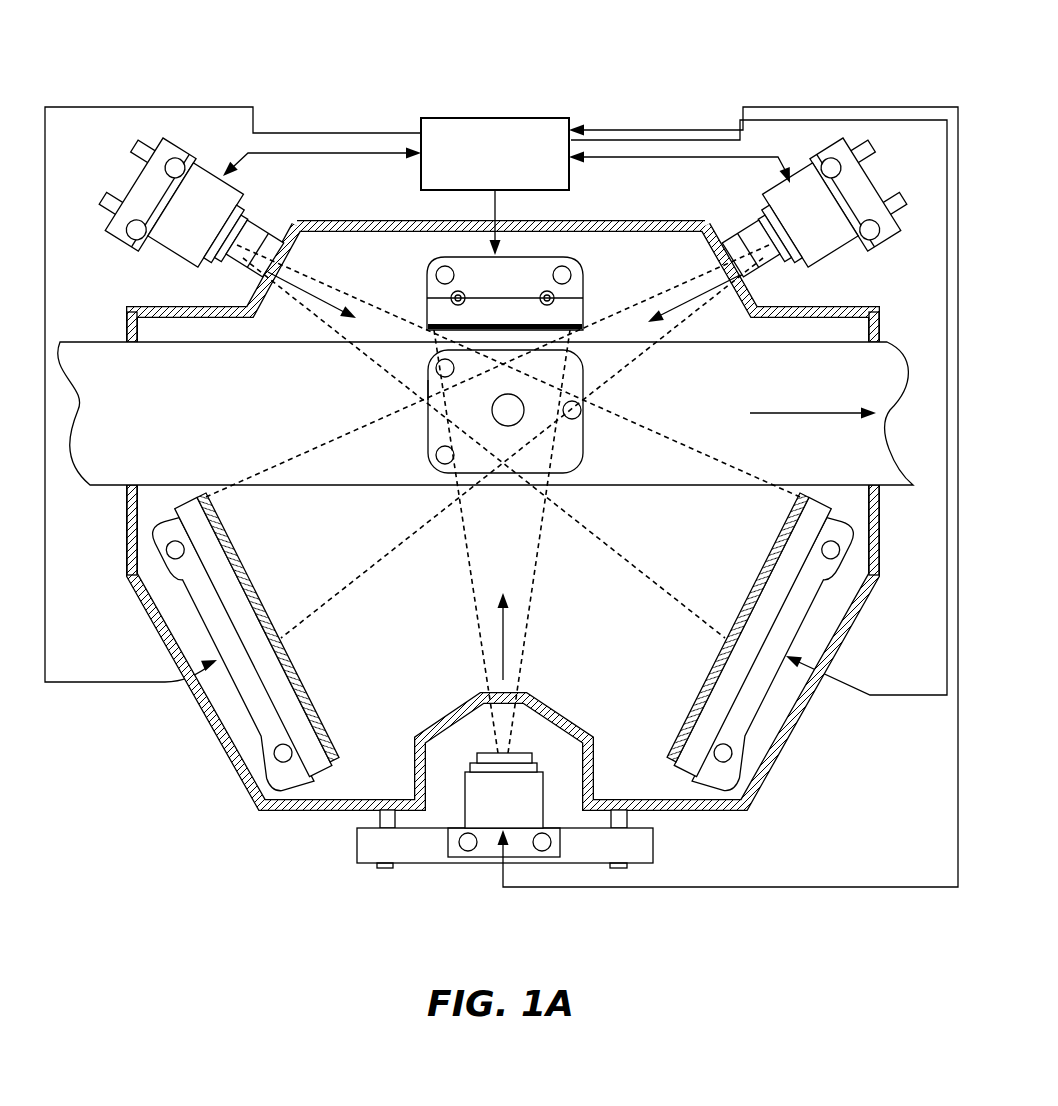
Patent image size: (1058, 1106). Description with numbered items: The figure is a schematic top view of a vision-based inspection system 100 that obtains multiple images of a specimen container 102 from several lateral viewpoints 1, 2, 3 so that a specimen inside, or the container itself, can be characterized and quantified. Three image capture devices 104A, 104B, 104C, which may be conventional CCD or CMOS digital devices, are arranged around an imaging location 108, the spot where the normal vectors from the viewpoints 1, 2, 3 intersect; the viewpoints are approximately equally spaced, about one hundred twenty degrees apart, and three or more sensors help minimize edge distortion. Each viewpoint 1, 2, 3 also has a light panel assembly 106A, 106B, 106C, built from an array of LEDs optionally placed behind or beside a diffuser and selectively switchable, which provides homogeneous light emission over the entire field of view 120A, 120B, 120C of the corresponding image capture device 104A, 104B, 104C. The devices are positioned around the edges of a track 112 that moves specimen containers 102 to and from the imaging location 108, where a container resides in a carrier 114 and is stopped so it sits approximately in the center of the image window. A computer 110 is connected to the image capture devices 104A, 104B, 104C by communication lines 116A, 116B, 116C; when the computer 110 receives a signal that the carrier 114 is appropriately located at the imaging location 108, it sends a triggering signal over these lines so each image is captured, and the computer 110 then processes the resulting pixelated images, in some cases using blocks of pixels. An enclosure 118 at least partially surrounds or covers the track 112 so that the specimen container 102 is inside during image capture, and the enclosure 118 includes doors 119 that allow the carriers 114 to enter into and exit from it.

The vision-based inspection system 100 is at (453, 50).
The computer 110 is at (500, 118).
The communication line 116A is at (745, 105).
The communication line 116B is at (320, 177).
The communication line 116C is at (680, 160).
The enclosure 118 is at (630, 220).
The door 119 is at (127, 493).
The image capture device 104A is at (467, 800).
The image capture device 104B is at (180, 262).
The image capture device 104C is at (818, 266).
The light panel assembly 106A is at (586, 290).
The light panel assembly 106B is at (750, 720).
The light panel assembly 106C is at (250, 707).
The track 112 is at (187, 425).
The carrier 114 is at (598, 387).
The specimen container 102 is at (480, 430).
The imaging location 108 is at (391, 390).
The field of view 120A is at (541, 548).
The field of view 120B is at (633, 555).
The field of view 120C is at (377, 588).
The viewpoint 1 is at (505, 652).
The viewpoint 2 is at (318, 298).
The viewpoint 3 is at (690, 298).